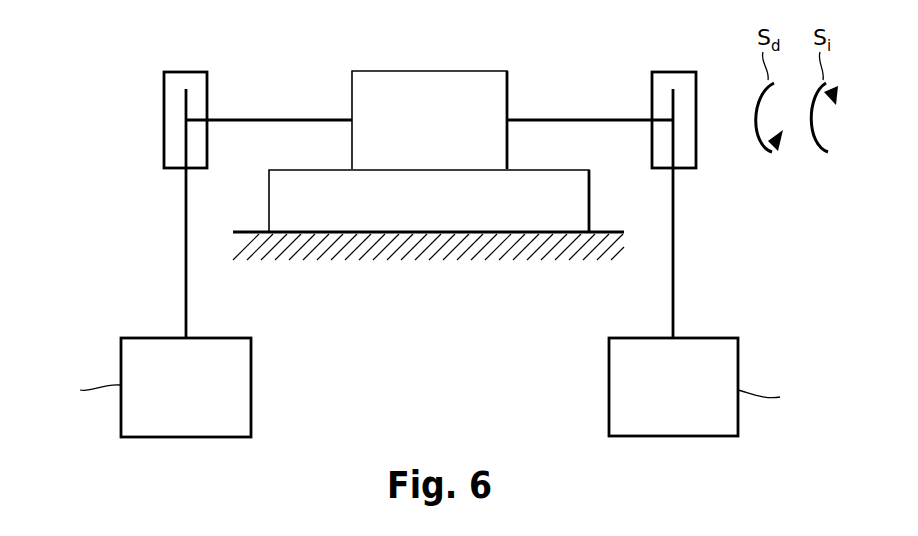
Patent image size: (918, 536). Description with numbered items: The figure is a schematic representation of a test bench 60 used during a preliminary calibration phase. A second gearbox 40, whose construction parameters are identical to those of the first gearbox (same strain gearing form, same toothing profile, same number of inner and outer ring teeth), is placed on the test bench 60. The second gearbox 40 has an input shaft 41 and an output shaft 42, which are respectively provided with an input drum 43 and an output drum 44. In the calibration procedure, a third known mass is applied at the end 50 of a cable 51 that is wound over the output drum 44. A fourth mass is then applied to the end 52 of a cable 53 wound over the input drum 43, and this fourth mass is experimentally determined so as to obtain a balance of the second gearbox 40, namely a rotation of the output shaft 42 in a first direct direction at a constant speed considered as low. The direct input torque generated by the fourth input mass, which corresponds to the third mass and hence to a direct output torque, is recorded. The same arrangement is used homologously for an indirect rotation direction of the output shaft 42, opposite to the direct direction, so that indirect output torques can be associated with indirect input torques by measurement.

The second gearbox 40 is at (430, 83).
The input shaft 41 is at (278, 120).
The output shaft 42 is at (582, 120).
The input drum 43 is at (183, 71).
The output drum 44 is at (680, 71).
The end of cable 50 is at (676, 334).
The cable 51 is at (676, 189).
The end of cable 52 is at (184, 334).
The cable 53 is at (184, 189).
The test bench 60 is at (405, 212).